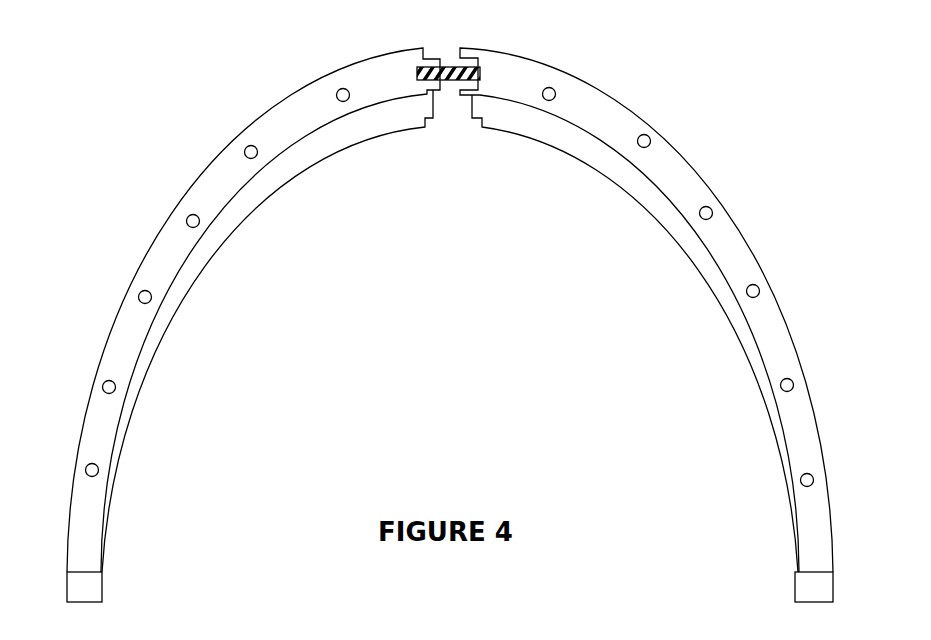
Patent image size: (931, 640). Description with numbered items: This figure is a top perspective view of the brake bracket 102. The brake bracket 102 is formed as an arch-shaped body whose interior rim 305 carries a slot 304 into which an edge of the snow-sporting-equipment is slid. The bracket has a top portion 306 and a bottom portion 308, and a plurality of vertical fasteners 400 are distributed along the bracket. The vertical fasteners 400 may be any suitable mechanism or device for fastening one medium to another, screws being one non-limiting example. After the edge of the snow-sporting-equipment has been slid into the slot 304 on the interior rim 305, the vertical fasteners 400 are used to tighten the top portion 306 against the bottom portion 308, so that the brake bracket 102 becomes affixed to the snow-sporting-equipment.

The brake bracket 102 is at (450, 307).
The slot 304 is at (373, 118).
The interior rim 305 is at (663, 200).
The top portion 306 is at (300, 123).
The bottom portion 308 is at (548, 148).
The vertical fasteners 400 is at (237, 148).